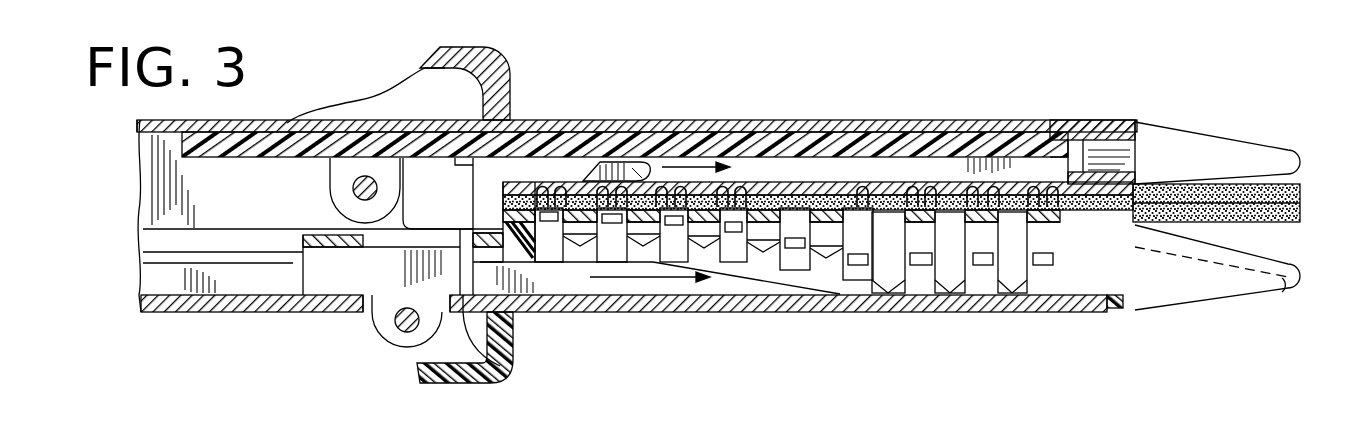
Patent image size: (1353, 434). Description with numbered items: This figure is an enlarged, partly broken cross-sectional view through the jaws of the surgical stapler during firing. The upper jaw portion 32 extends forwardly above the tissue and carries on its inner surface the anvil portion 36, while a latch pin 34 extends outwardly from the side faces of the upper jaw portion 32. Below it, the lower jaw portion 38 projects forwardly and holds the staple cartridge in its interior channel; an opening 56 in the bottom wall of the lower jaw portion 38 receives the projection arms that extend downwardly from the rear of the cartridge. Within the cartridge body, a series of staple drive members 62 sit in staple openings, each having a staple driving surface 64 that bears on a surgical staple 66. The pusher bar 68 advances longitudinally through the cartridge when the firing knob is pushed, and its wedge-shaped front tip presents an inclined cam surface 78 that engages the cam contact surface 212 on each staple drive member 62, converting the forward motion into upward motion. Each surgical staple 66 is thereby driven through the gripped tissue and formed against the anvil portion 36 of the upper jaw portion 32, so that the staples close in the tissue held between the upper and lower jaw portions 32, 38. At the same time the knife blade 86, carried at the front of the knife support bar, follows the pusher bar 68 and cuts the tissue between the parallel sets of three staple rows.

The upper jaw portion 32 is at (961, 124).
The latch pin 34 is at (365, 176).
The anvil portion 36 is at (1020, 184).
The lower jaw portion 38 is at (888, 313).
The opening 56 is at (493, 337).
The staple drive member 62 is at (982, 280).
The staple driving surface 64 is at (735, 233).
The surgical staple 66 is at (540, 187).
The pusher bar 68 is at (635, 285).
The inclined cam surface 78 is at (762, 264).
The knife blade 86 is at (624, 172).
The cam contact surface 212 is at (585, 246).